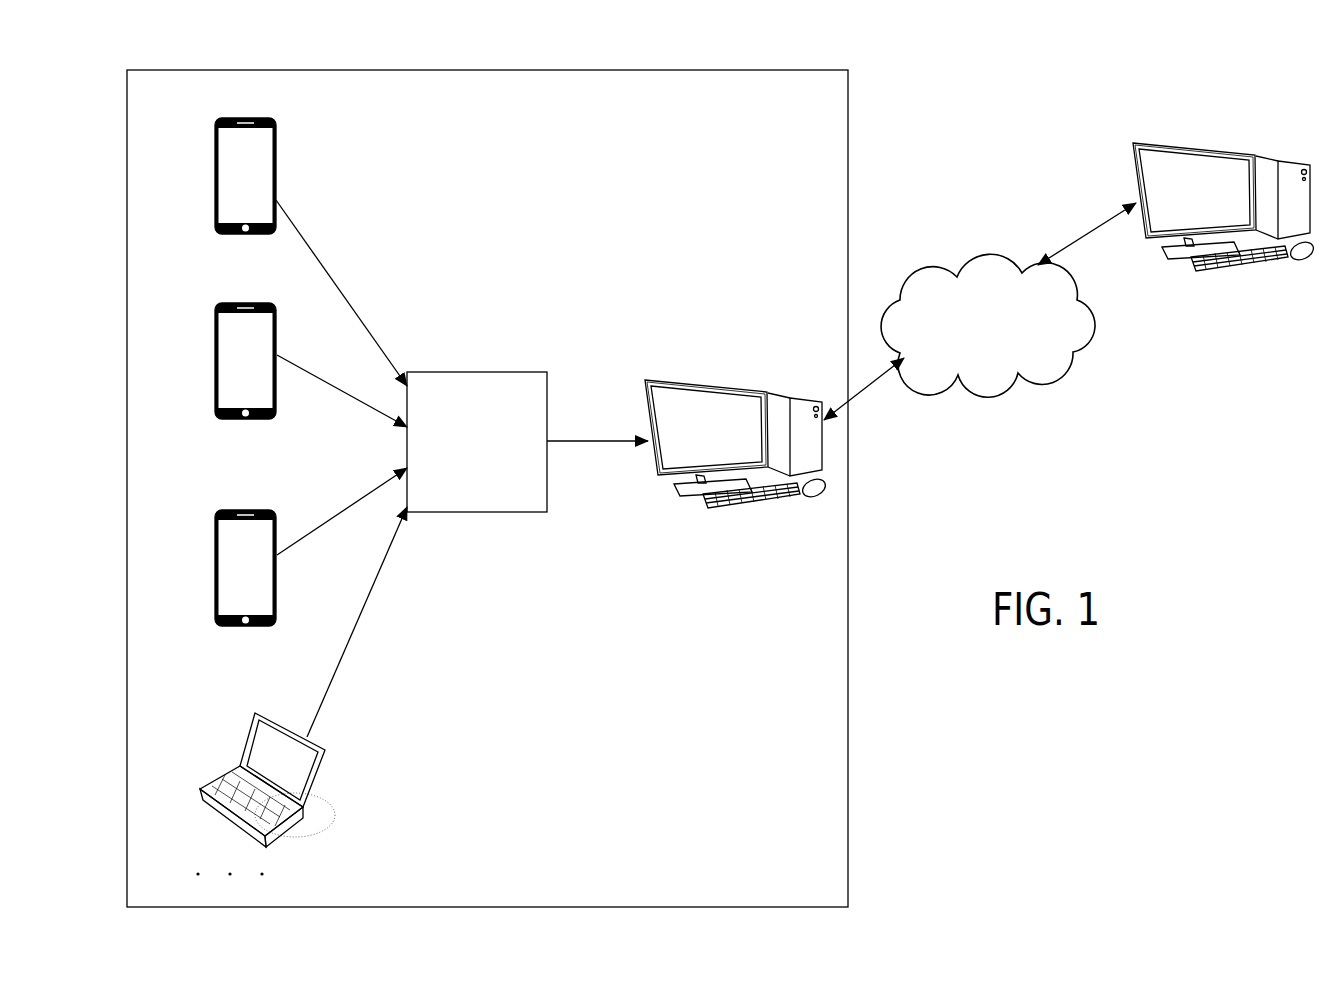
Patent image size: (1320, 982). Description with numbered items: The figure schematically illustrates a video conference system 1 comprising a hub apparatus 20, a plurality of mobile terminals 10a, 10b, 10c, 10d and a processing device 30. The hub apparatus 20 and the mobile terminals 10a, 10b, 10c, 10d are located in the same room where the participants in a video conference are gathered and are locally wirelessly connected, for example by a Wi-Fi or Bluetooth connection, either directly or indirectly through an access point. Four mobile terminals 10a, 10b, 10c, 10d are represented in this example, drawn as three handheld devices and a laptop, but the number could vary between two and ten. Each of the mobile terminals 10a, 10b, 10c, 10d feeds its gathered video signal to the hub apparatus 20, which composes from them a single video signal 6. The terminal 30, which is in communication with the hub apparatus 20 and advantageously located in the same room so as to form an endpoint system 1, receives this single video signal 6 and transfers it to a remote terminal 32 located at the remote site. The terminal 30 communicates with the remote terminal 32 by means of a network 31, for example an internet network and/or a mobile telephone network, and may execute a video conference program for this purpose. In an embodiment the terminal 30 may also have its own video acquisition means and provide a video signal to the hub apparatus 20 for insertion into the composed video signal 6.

The video conference system 1 is at (594, 70).
The mobile terminal 10a is at (216, 133).
The mobile terminal 10b is at (215, 348).
The mobile terminal 10c is at (215, 560).
The mobile terminal 10d is at (200, 791).
The hub apparatus 20 is at (483, 372).
The single video signal 6 is at (578, 445).
The processing device 30 is at (648, 380).
The network 31 is at (984, 252).
The remote terminal 32 is at (1135, 144).